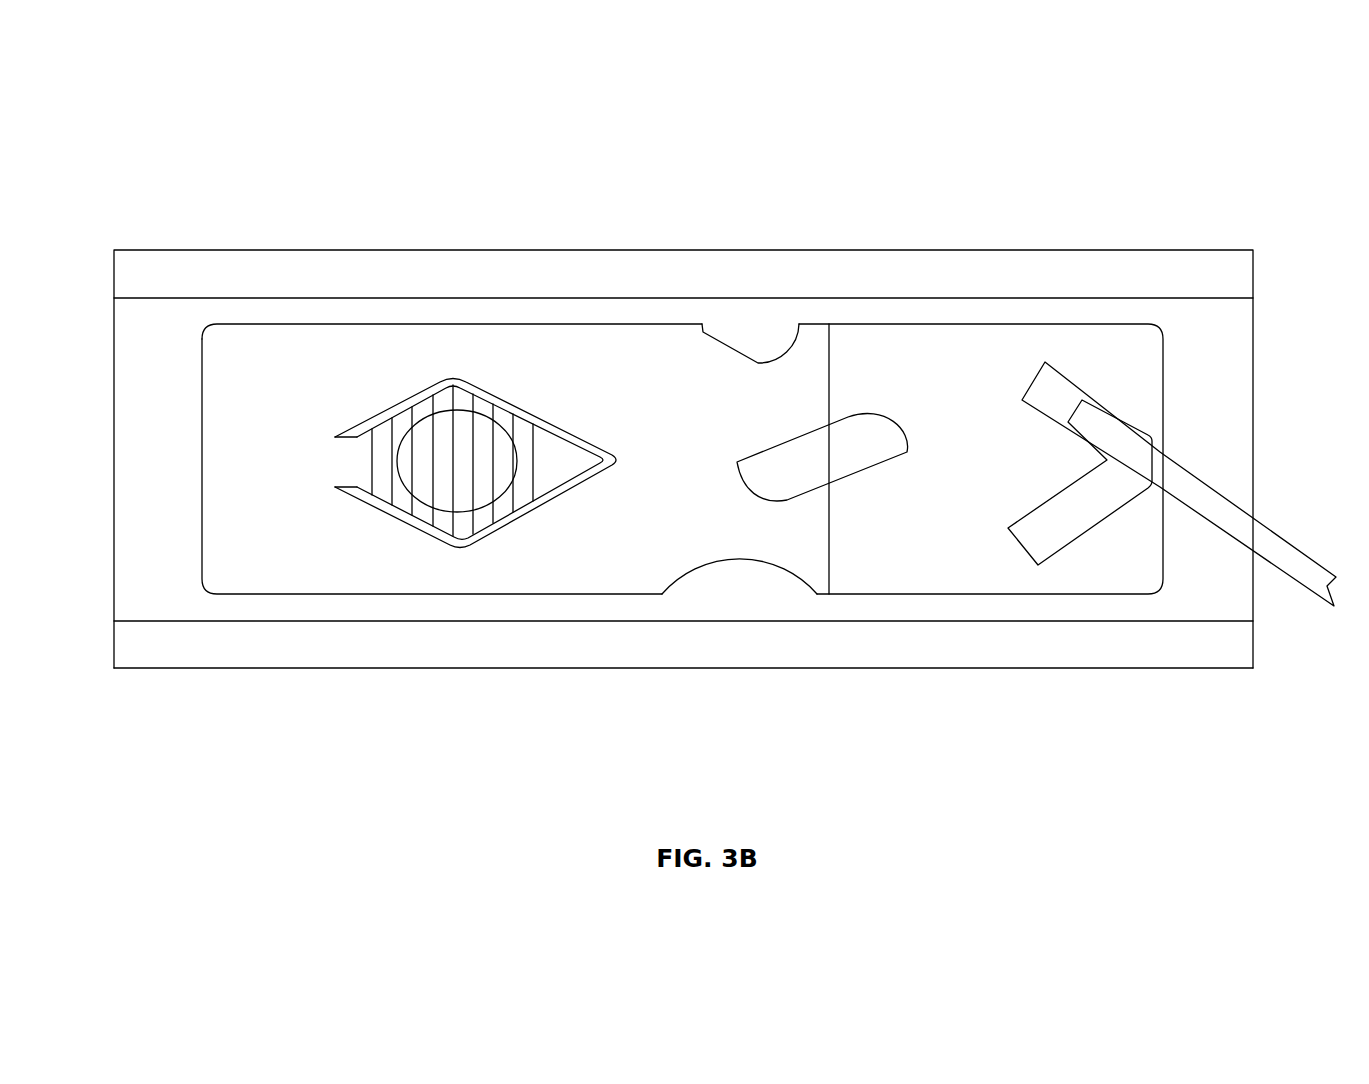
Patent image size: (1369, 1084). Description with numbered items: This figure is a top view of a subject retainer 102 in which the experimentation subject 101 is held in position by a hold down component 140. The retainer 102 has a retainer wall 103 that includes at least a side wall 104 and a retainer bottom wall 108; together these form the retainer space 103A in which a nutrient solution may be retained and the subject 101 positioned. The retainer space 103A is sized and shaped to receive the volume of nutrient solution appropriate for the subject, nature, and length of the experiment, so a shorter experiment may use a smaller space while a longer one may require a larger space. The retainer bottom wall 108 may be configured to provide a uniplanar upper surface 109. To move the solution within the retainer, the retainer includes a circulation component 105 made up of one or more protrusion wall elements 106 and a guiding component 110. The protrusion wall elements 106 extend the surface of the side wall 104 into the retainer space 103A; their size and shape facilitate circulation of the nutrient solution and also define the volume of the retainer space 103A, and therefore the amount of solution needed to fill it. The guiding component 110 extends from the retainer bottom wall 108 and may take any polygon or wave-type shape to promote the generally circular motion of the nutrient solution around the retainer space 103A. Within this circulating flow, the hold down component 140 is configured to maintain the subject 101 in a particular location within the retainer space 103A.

The experimentation subject 101 is at (464, 435).
The retainer 102 is at (1003, 188).
The retainer wall 103 is at (872, 680).
The retainer space 103A is at (261, 505).
The side wall 104 is at (320, 288).
The circulation component 105 is at (613, 690).
The protrusion wall element 106 is at (750, 323).
The retainer bottom wall 108 is at (612, 360).
The uniplanar upper surface 109 is at (872, 353).
The guiding component 110 is at (843, 452).
The hold down component 140 is at (533, 510).